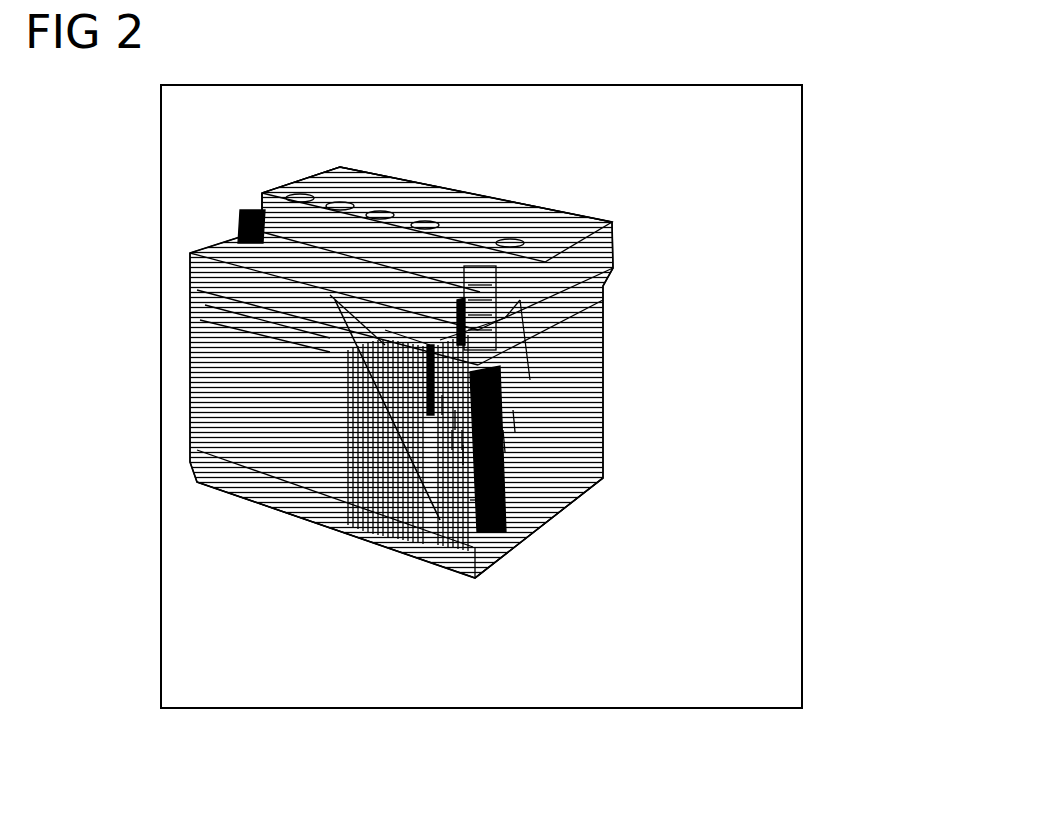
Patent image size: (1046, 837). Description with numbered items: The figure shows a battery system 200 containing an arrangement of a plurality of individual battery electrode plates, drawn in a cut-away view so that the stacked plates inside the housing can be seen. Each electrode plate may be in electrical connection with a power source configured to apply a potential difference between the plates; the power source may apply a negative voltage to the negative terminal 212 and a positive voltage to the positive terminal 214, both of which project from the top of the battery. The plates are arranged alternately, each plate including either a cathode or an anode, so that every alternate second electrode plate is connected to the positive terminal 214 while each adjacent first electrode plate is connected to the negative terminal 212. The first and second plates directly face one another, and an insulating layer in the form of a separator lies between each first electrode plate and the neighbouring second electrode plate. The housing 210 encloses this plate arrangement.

The battery system 200 is at (802, 281).
The battery housing 210 is at (820, 135).
The negative terminal 212 is at (251, 210).
The positive terminal 214 is at (475, 266).